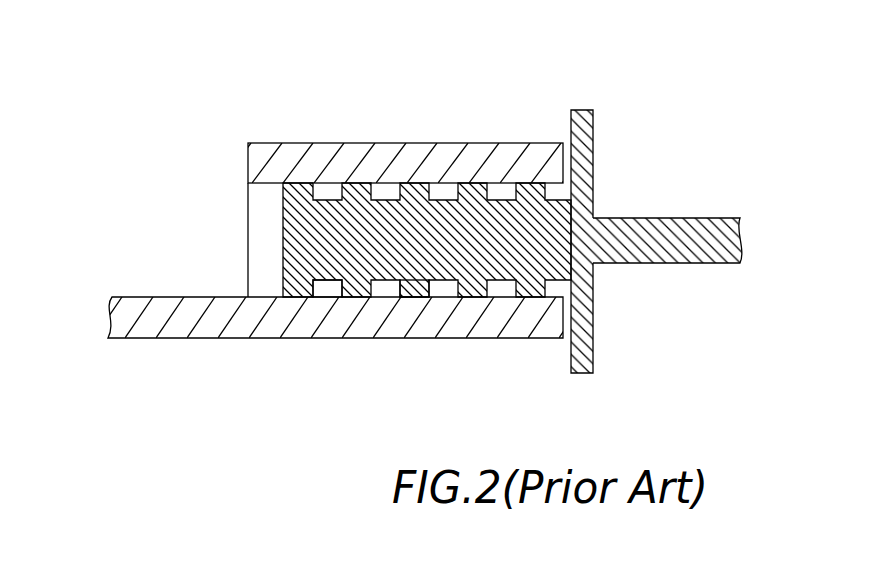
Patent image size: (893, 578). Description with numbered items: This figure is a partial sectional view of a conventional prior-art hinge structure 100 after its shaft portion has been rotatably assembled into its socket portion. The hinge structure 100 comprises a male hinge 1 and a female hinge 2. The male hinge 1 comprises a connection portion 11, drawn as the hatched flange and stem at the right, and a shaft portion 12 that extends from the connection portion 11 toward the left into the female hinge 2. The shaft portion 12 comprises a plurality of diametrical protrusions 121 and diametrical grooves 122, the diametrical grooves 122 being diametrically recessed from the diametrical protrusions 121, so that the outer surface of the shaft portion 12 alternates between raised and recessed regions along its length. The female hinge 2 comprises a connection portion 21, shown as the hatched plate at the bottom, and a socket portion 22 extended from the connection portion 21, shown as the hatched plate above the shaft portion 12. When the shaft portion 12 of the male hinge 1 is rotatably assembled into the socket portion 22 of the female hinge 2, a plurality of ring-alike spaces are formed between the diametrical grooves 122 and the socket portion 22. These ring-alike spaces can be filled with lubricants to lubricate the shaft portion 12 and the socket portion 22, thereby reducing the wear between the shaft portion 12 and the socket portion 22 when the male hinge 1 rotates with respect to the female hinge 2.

The hinge structure 100 is at (349, 96).
The male hinge 1 is at (645, 87).
The connection portion 11 is at (661, 251).
The female hinge 2 is at (152, 260).
The connection portion 21 is at (186, 332).
The socket portion 22 is at (254, 166).
The shaft portion 12 is at (330, 397).
The diametrical protrusions 121 is at (407, 292).
The diametrical grooves 122 is at (330, 292).